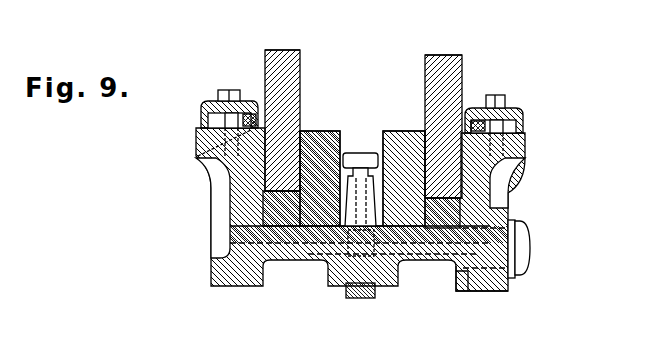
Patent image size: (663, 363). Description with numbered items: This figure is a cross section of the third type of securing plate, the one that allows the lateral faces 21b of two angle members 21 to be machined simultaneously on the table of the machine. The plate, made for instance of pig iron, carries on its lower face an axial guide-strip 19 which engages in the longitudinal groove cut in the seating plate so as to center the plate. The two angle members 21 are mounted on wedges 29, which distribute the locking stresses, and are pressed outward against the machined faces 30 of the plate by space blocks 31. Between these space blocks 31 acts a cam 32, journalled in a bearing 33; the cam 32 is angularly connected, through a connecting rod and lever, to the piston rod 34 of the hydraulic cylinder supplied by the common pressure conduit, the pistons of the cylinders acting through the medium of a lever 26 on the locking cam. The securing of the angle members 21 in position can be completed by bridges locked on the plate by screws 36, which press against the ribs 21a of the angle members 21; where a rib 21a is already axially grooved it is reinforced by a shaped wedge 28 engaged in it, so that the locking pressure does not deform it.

The axial guide-strip 19 is at (360, 301).
The angle member 21 is at (280, 92).
The rib 21a is at (252, 107).
The lateral face 21b is at (267, 42).
The lever 26 is at (513, 240).
The shaped wedge 28 is at (194, 156).
The wedge 29 is at (262, 209).
The machined face 30 is at (488, 170).
The space block 31 is at (312, 207).
The cam 32 is at (341, 148).
The bearing 33 is at (342, 207).
The piston rod 34 is at (452, 268).
The screw 36 is at (485, 96).